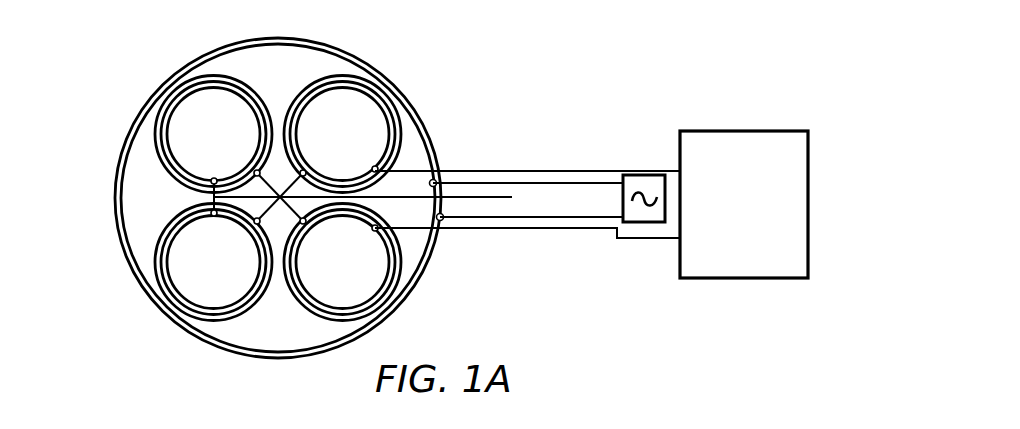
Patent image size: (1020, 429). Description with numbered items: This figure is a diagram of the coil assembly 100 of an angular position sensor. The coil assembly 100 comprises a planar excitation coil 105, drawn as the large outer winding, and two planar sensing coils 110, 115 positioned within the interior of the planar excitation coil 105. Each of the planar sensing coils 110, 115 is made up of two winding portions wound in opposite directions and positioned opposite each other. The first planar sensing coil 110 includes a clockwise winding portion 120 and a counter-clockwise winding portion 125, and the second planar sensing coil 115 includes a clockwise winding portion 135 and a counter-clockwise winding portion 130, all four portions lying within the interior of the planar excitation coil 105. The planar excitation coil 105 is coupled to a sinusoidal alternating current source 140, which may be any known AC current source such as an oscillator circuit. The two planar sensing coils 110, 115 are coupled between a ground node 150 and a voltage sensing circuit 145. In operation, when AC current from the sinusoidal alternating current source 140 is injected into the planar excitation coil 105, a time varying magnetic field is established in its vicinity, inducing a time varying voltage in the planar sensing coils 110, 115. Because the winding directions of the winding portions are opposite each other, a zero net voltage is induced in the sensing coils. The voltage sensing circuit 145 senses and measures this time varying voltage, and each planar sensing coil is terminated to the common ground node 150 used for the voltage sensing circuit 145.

The coil assembly 100 is at (142, 25).
The planar excitation coil 105 is at (583, 182).
The first planar sensing coil 110 is at (498, 171).
The second planar sensing coil 115 is at (572, 228).
The clockwise winding portion 120 is at (377, 85).
The counter-clockwise winding portion 125 is at (168, 300).
The counter-clockwise winding portion 130 is at (163, 105).
The clockwise winding portion 135 is at (390, 295).
The sinusoidal alternating current source 140 is at (644, 175).
The voltage sensing circuit 145 is at (742, 130).
The ground node 150 is at (480, 198).